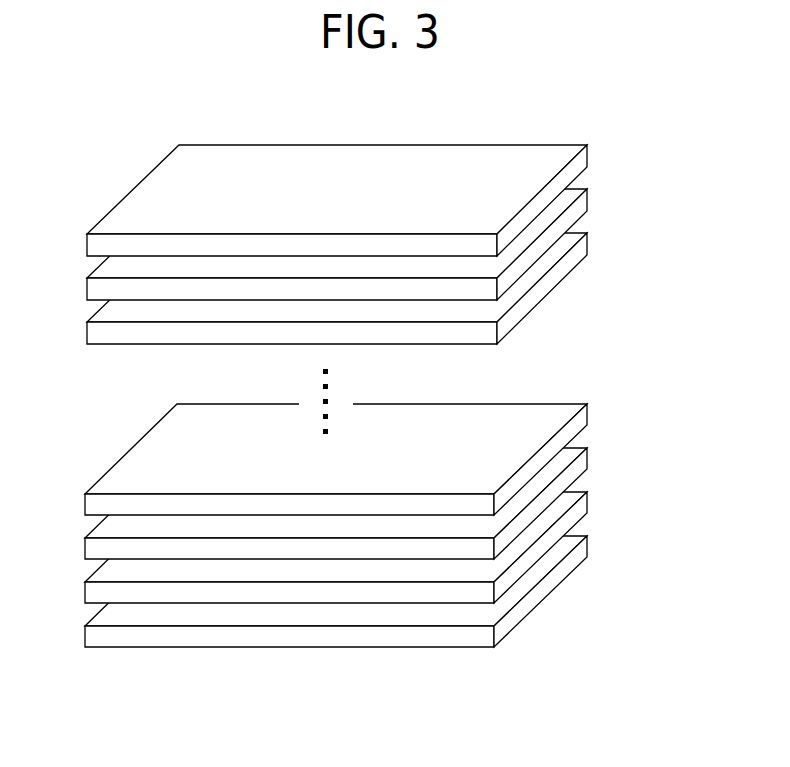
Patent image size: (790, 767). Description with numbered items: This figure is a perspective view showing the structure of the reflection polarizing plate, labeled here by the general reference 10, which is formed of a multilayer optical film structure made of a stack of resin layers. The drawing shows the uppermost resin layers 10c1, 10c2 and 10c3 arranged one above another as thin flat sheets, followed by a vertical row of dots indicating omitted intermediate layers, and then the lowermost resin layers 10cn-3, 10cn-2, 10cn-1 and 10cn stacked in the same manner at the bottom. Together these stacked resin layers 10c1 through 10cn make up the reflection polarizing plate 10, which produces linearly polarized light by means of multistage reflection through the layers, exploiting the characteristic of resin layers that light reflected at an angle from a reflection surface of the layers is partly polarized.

The stacked body 10 is at (604, 113).
The resin layer 10c1 is at (587, 160).
The resin layer 10c2 is at (587, 204).
The resin layer 10c3 is at (587, 248).
The resin layer 10cn-3 is at (587, 419).
The resin layer 10cn-2 is at (587, 463).
The resin layer 10cn-1 is at (587, 507).
The resin layer 10cn is at (587, 551).